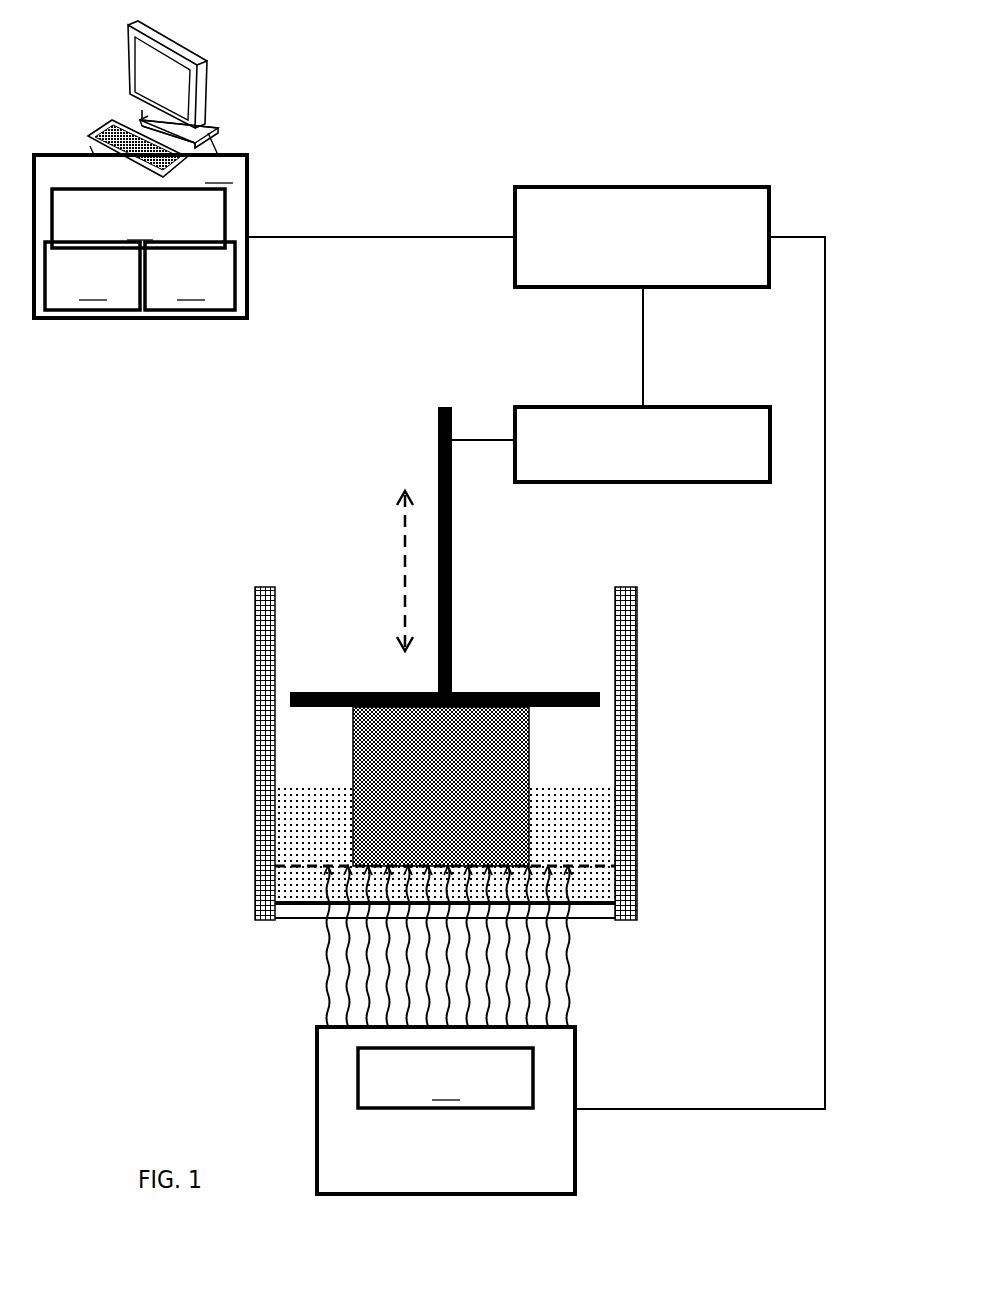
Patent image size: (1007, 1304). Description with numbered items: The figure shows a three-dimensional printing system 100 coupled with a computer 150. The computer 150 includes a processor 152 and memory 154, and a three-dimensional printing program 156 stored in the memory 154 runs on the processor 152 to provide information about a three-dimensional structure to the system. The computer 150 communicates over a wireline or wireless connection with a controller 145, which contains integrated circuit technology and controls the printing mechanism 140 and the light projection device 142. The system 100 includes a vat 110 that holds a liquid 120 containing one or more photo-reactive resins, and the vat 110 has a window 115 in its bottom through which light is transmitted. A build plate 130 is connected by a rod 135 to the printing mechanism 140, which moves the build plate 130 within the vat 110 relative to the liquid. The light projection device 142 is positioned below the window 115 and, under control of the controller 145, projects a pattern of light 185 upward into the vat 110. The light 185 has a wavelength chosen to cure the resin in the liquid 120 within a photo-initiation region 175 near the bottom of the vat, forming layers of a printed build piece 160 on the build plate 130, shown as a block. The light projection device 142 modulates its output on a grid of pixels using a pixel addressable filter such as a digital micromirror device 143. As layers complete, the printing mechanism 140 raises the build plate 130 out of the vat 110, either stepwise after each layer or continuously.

The 3D printing system 100 is at (738, 66).
The vat 110 is at (255, 618).
The window 115 is at (595, 920).
The liquid 120 is at (573, 793).
The build plate 130 is at (513, 692).
The rod 135 is at (452, 567).
The 3D printing mechanism 140 is at (700, 407).
The light projection device 142 is at (491, 1108).
The digital micromirror device (DMD) 143 is at (445, 1078).
The controller 145 is at (733, 187).
The computer 150 is at (140, 169).
The processor 152 is at (92, 276).
The memory 154 is at (190, 276).
The 3D printing program 156 is at (138, 218).
The 3D printed build piece 160 is at (353, 733).
The photo-initiation region 175 is at (288, 881).
The light 185 is at (330, 1002).